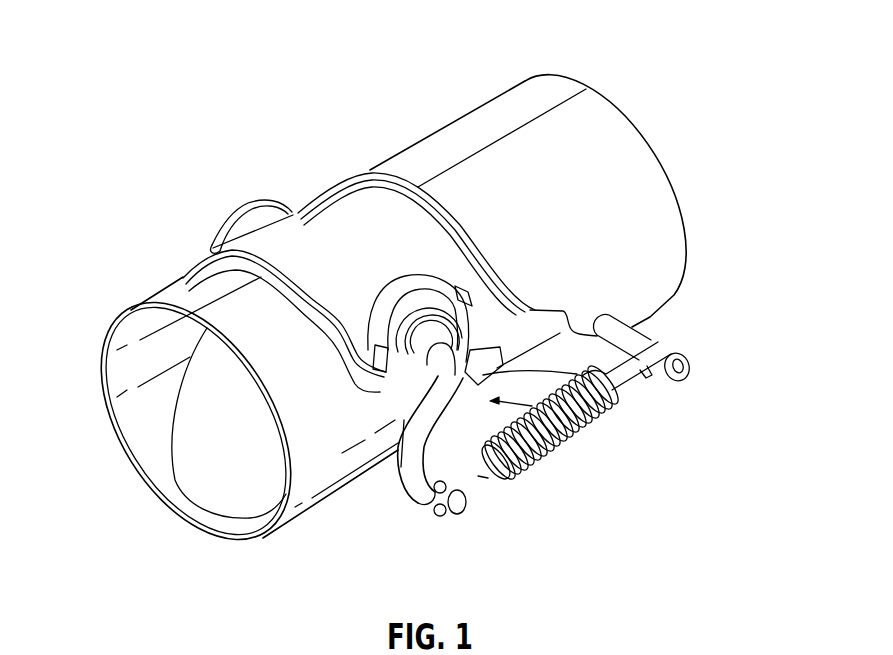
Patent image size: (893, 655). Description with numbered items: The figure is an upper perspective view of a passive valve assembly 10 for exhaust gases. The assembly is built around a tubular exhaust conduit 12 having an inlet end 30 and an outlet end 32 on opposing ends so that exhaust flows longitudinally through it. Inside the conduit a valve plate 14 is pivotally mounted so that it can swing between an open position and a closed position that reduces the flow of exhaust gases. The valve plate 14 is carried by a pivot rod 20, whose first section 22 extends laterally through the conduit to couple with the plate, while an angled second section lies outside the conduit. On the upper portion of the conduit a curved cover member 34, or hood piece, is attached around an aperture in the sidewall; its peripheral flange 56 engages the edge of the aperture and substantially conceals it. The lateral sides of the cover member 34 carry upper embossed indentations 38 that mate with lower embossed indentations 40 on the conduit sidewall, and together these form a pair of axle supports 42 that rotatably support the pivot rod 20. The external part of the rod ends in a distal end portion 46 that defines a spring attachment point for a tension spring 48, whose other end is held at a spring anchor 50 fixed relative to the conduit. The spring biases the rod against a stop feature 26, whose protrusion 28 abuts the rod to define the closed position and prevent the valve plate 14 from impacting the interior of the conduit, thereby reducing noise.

The passive valve assembly 10 is at (185, 127).
The exhaust conduit 12 is at (653, 213).
The valve plate 14 is at (233, 470).
The pivot rod 20 is at (393, 482).
The first section 22 is at (483, 357).
The stop feature 26 is at (593, 427).
The protrusion 28 is at (610, 390).
The inlet end 30 is at (660, 117).
The outlet end 32 is at (128, 426).
The cover member 34 is at (359, 253).
The upper embossed indentations 38 is at (260, 221).
The lower embossed indentations 40 is at (393, 397).
The axle supports 42 is at (217, 218).
The distal end portion 46 is at (441, 520).
The tension spring 48 is at (547, 457).
The spring anchor 50 is at (637, 340).
The peripheral flange 56 is at (395, 183).